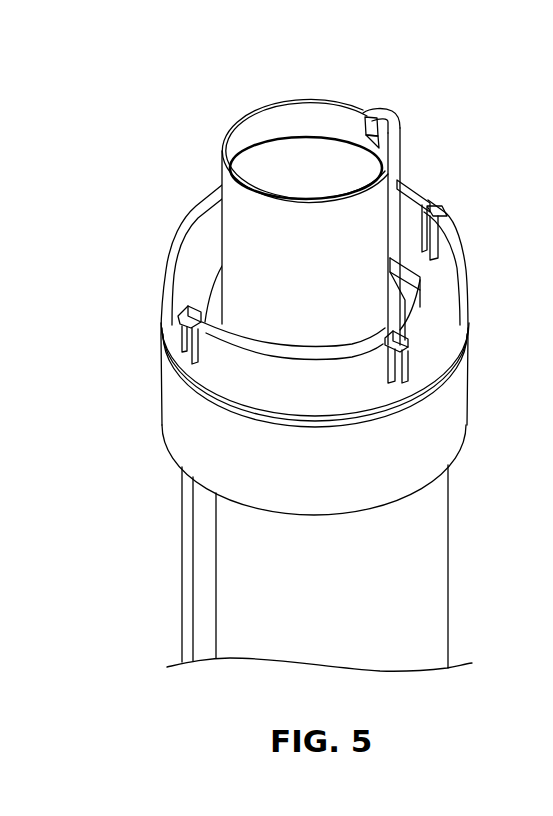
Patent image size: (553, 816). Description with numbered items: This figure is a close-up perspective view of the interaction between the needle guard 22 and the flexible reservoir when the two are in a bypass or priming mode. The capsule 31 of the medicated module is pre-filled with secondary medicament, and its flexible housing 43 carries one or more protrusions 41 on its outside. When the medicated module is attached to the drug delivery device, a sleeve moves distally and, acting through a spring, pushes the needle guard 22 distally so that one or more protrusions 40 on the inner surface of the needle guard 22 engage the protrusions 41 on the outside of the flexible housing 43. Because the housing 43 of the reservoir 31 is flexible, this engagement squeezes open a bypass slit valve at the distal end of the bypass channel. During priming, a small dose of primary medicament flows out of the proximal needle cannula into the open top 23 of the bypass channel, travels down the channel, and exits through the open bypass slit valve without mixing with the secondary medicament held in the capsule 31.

The needle guard 22 is at (450, 625).
The open top 23 is at (380, 122).
The capsule 31 is at (315, 275).
The protrusions 40 is at (420, 282).
The protrusions 41 is at (397, 330).
The flexible housing 43 is at (375, 207).